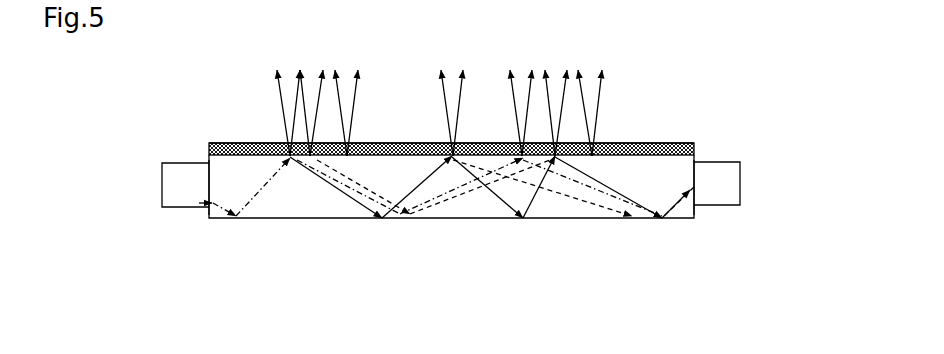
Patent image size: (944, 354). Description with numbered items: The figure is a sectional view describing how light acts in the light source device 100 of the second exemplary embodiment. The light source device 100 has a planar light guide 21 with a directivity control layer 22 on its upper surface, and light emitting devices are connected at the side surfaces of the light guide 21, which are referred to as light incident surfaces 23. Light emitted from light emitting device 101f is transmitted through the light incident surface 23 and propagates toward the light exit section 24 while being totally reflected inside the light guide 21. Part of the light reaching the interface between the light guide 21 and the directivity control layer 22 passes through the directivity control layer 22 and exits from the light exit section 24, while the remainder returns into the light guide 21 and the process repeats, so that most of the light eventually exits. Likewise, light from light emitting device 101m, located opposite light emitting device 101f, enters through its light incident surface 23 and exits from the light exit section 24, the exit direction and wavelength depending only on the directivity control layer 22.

The light source device 100 is at (189, 142).
The light guide 21 is at (472, 219).
The directivity control layer 22 is at (725, 124).
The light incident surface 23 is at (206, 203).
The light exit section 24 is at (621, 141).
The light emitting device 101m is at (177, 190).
The light emitting device 101f is at (726, 186).